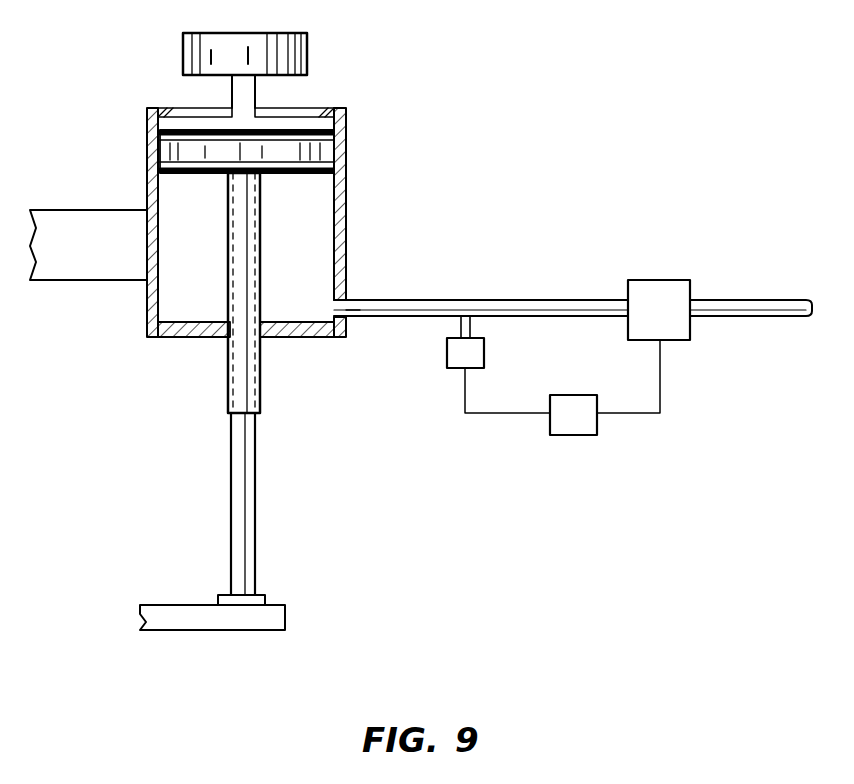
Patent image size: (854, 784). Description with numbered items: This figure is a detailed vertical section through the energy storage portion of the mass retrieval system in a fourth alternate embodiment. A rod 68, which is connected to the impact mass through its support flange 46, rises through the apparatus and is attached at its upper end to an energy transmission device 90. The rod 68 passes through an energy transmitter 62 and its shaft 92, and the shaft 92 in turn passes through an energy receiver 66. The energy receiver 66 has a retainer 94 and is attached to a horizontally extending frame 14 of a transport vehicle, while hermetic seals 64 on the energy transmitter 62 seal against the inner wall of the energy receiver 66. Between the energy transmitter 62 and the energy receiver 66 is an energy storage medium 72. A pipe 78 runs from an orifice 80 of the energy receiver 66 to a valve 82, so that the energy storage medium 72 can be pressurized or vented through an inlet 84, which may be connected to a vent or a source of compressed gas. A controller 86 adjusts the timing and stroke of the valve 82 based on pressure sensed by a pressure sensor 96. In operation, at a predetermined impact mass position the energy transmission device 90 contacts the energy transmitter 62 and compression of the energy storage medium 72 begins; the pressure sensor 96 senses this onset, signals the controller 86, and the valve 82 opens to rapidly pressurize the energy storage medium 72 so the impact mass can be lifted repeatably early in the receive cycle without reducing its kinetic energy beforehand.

The frame 14 is at (88, 257).
The support flange 46 is at (285, 615).
The energy transmitter 62 is at (276, 147).
The hermetic seals 64 is at (334, 135).
The energy receiver 66 is at (346, 240).
The rod 68 is at (256, 541).
The energy storage medium 72 is at (183, 305).
The pipe 78 is at (403, 300).
The orifice 80 is at (352, 318).
The valve 82 is at (672, 324).
The inlet 84 is at (739, 322).
The controller 86 is at (586, 425).
The energy transmission device 90 is at (183, 49).
The shaft 92 is at (260, 392).
The retainer 94 is at (327, 108).
The pressure sensor 96 is at (484, 358).